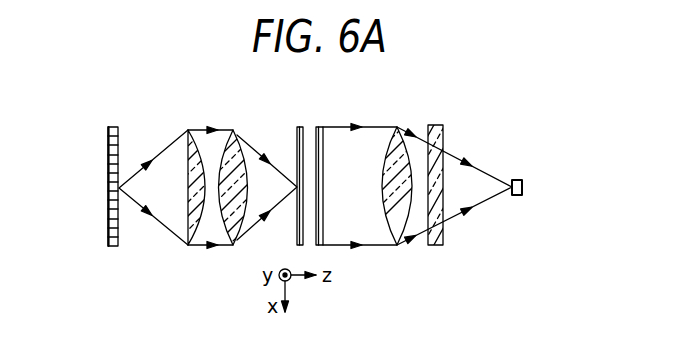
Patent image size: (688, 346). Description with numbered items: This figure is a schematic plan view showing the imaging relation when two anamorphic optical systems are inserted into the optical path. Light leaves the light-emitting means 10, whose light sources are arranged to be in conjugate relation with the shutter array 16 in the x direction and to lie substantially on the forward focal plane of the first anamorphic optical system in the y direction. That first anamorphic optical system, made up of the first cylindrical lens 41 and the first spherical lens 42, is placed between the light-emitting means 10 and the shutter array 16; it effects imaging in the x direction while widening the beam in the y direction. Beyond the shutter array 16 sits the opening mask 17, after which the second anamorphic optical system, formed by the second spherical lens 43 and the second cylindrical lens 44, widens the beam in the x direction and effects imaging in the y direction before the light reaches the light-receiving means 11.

The light-emitting means 10 is at (113, 126).
The first cylindrical lens 41 is at (188, 128).
The first spherical lens 42 is at (234, 128).
The shutter array 16 is at (298, 127).
The opening mask 17 is at (318, 127).
The second spherical lens 43 is at (396, 127).
The second cylindrical lens 44 is at (432, 125).
The light-receiving means 11 is at (514, 179).